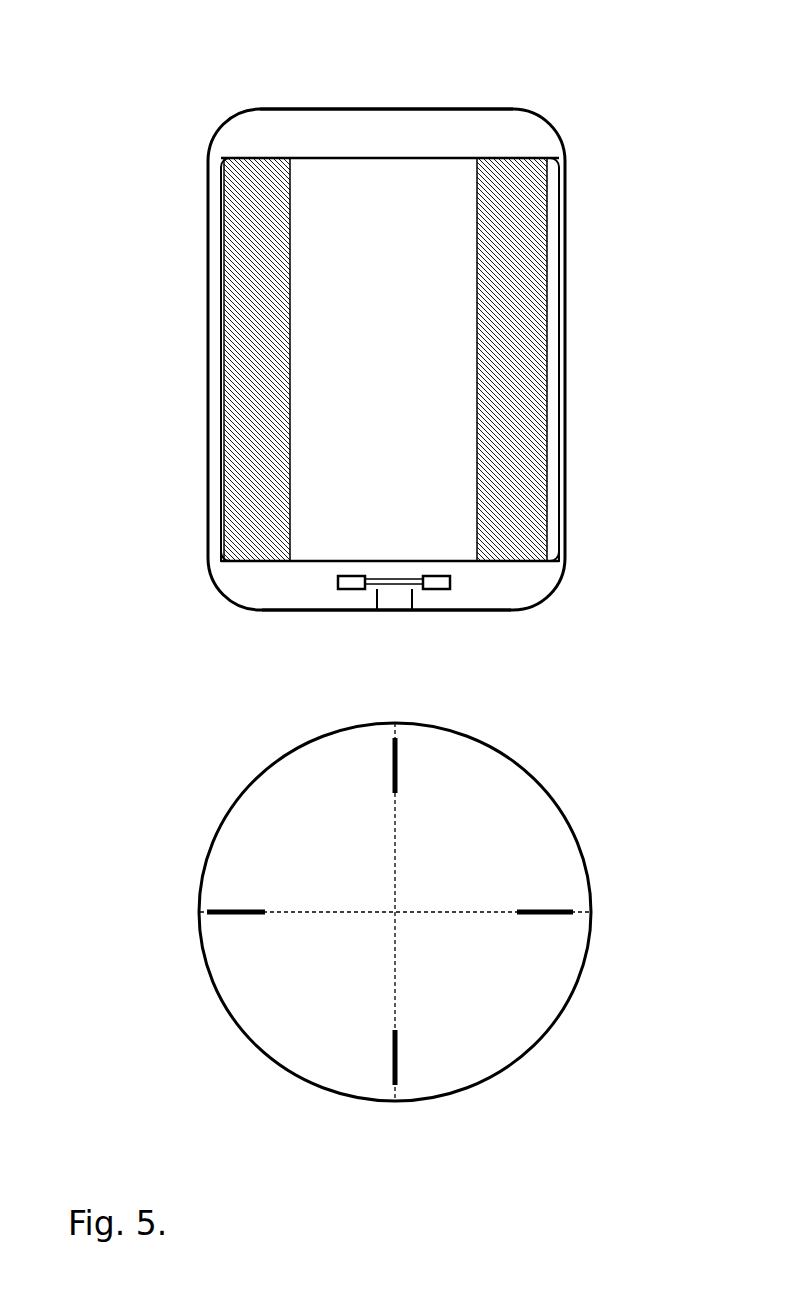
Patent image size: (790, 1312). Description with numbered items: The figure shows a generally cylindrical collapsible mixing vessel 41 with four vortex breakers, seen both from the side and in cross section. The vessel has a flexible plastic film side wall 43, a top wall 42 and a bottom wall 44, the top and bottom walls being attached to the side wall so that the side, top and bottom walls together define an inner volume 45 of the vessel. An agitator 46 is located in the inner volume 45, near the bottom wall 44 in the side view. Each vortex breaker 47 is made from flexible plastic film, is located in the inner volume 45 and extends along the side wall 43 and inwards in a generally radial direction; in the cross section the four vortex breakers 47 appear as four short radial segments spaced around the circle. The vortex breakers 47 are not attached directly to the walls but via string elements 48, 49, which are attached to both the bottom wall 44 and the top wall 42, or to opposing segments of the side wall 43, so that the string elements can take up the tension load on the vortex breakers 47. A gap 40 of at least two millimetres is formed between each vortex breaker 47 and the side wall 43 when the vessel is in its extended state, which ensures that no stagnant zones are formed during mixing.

The gap 40 is at (556, 330).
The mixing vessel 41 is at (160, 659).
The top wall 42 is at (335, 108).
The side wall 43 is at (206, 358).
The bottom wall 44 is at (478, 612).
The inner volume 45 is at (353, 397).
The agitator 46 is at (352, 589).
The vortex breaker 47 is at (242, 257).
The string element 48 is at (215, 565).
The string element 49 is at (221, 155).